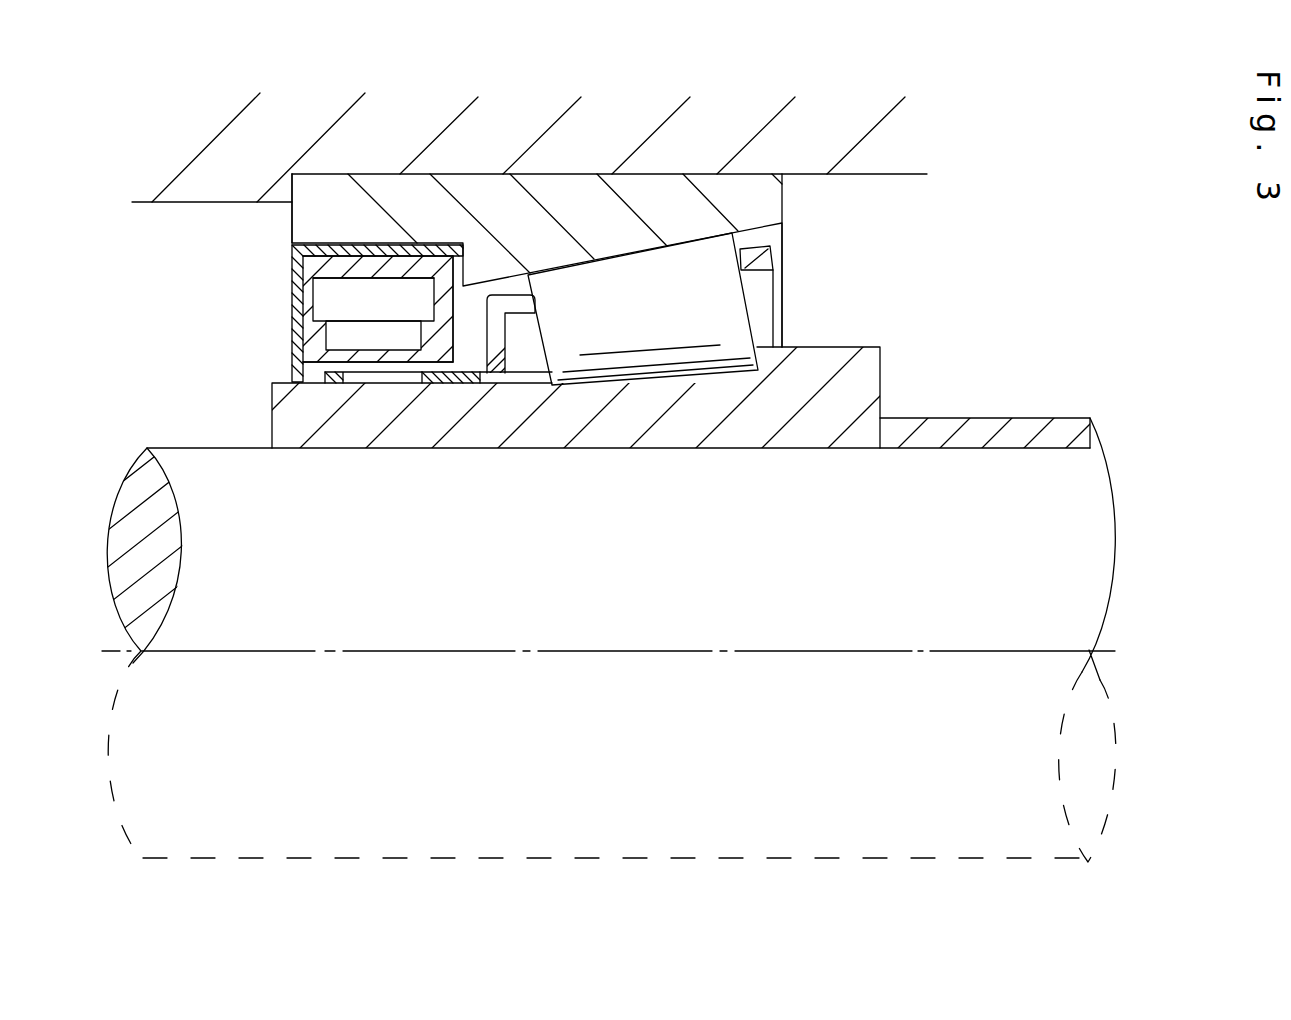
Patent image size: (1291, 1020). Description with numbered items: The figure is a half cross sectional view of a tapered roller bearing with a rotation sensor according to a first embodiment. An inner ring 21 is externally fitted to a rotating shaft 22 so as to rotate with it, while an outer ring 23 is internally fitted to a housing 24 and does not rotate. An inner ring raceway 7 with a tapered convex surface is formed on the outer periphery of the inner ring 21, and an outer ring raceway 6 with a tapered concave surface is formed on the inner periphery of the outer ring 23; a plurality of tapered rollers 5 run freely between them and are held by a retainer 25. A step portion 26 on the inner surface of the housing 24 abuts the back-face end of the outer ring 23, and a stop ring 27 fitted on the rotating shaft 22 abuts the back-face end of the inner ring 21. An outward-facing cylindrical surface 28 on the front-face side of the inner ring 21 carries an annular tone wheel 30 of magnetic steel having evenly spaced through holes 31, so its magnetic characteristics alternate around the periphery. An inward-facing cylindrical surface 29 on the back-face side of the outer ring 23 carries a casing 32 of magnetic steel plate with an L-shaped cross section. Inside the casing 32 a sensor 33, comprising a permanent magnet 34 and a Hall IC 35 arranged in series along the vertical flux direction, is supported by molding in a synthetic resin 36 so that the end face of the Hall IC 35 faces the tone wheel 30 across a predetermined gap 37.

The tapered rollers 5 is at (763, 317).
The outer ring raceway 6 is at (700, 240).
The inner ring raceway 7 is at (660, 378).
The inner ring 21 is at (685, 440).
The rotating shaft 22 is at (1078, 598).
The outer ring 23 is at (637, 203).
The housing 24 is at (703, 143).
The retainer 25 is at (778, 250).
The step portion 26 is at (293, 186).
The stop ring 27 is at (982, 427).
The outward-facing cylindrical surface 28 is at (358, 375).
The inward-facing cylindrical surface 29 is at (382, 292).
The tone wheel 30 is at (480, 373).
The through holes 31 is at (412, 377).
The casing 32 is at (296, 278).
The sensor 33 is at (383, 290).
The permanent magnet 34 is at (358, 293).
The Hall IC 35 is at (333, 335).
The synthetic resin 36 is at (433, 263).
The gap 37 is at (340, 368).